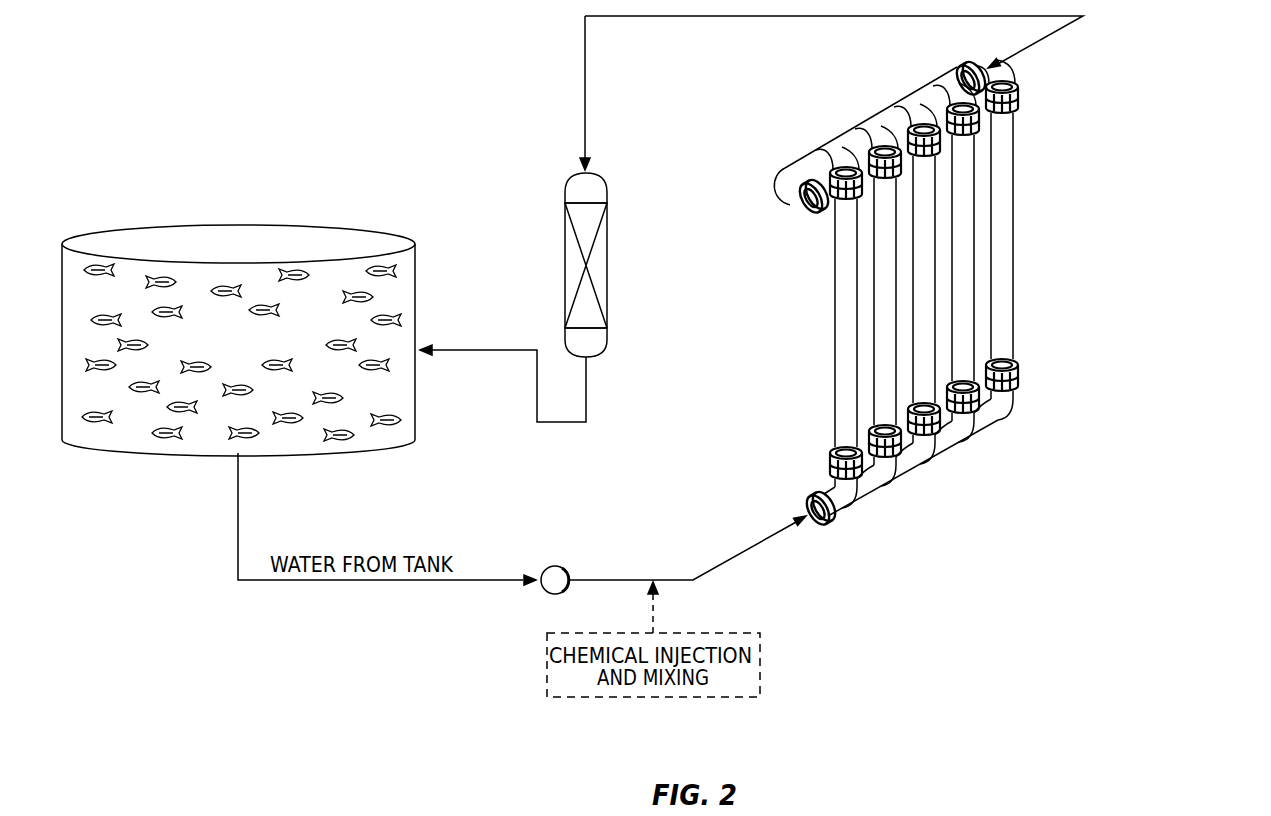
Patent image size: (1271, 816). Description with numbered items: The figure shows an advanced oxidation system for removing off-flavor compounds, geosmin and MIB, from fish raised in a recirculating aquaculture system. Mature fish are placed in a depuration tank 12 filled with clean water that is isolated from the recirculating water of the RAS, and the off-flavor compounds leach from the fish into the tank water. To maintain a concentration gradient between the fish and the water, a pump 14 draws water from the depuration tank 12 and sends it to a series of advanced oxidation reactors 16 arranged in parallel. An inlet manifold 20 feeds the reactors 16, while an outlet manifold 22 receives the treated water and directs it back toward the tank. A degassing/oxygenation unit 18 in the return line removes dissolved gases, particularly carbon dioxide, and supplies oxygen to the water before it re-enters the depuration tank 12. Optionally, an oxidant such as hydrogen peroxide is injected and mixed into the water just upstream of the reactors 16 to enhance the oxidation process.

The depuration tank 12 is at (140, 454).
The pump 14 is at (566, 569).
The advanced oxidation reactor 16 is at (1002, 283).
The degassing/oxygenation unit 18 is at (607, 243).
The inlet manifold 20 is at (887, 470).
The outlet manifold 22 is at (893, 123).